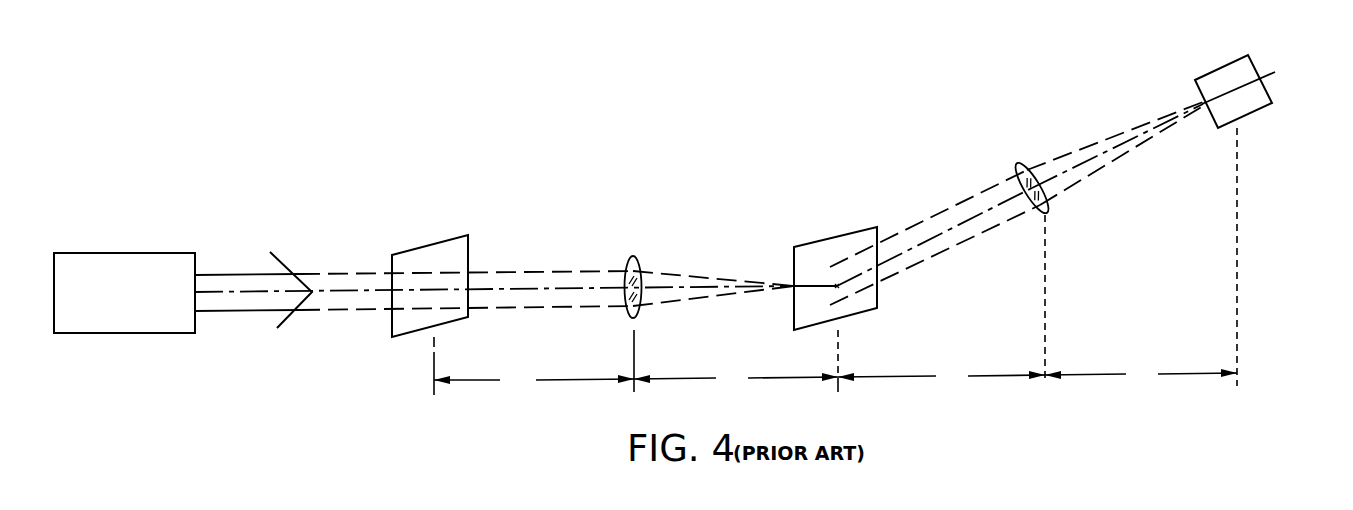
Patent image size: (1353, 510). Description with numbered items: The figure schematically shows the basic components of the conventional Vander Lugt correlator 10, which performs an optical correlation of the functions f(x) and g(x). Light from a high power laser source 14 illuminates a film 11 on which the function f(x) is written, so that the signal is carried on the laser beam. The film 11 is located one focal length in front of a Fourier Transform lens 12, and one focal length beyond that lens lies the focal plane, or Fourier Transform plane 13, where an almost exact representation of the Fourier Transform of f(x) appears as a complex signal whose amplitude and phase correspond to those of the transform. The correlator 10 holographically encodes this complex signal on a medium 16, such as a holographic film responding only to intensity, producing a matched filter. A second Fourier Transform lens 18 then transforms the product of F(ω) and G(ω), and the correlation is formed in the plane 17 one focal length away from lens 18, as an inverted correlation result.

The Vander Lugt correlator 10 is at (476, 168).
The film 11 is at (445, 240).
The Fourier Transform lens 12 is at (633, 255).
The plane 13 is at (832, 252).
The laser source 14 is at (80, 335).
The medium 16 is at (853, 238).
The plane 17 is at (1216, 128).
The Fourier Transform lens 18 is at (1020, 162).